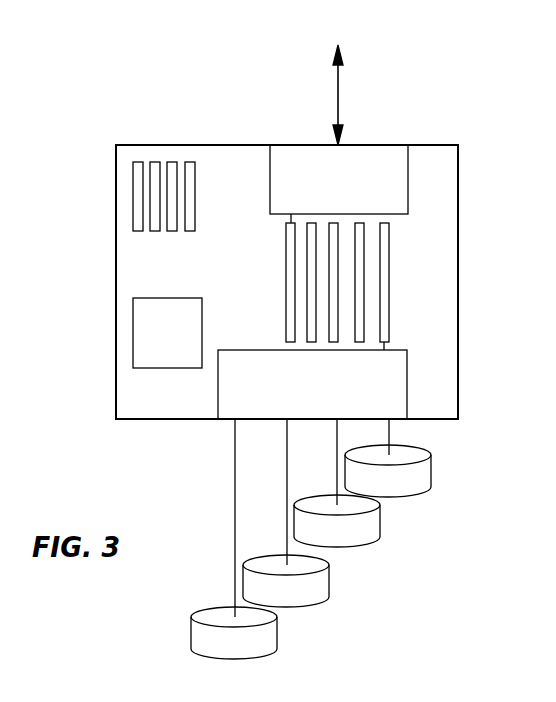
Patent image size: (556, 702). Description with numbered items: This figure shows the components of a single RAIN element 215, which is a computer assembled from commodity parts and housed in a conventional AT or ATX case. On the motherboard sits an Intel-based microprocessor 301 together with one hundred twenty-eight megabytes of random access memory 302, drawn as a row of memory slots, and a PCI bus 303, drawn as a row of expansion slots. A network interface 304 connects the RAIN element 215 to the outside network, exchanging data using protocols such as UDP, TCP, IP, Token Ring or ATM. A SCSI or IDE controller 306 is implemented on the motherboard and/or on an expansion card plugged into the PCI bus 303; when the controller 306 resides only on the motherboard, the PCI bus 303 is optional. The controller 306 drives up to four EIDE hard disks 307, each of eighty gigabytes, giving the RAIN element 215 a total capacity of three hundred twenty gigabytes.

The RAIN element 215 is at (442, 95).
The microprocessor 301 is at (147, 323).
The random access memory 302 is at (133, 190).
The PCI bus 303 is at (283, 265).
The network interface 304 is at (287, 162).
The controller 306 is at (388, 385).
The hard disk 307 is at (423, 472).